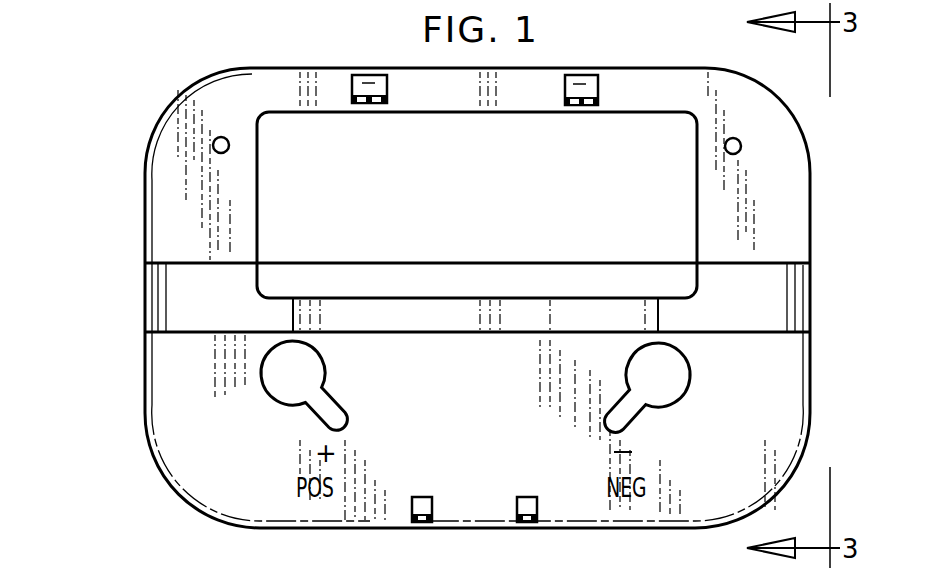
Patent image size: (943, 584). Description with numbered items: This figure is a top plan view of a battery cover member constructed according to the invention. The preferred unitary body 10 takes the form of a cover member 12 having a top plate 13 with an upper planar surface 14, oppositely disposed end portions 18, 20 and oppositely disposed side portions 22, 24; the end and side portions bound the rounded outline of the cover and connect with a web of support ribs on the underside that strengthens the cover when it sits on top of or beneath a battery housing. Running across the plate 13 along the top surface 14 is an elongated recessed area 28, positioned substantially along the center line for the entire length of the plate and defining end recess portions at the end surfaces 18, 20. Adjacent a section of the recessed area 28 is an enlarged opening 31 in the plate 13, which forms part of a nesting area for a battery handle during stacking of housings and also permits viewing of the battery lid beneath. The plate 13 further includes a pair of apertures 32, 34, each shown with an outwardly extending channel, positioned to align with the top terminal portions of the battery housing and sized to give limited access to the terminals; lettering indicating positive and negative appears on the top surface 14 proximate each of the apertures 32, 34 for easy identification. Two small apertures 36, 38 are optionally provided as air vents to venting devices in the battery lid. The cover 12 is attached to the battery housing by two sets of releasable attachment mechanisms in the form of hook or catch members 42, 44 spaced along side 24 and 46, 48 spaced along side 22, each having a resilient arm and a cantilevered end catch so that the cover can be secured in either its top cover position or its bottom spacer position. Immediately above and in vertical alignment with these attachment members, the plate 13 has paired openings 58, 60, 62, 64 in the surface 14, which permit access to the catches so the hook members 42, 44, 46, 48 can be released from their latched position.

The unitary body 10 is at (132, 473).
The cover member 12 is at (188, 357).
The top plate 13 is at (471, 408).
The upper planar surface 14 is at (160, 200).
The end portion 18 is at (145, 226).
The end portion 20 is at (803, 146).
The side portion 22 is at (417, 66).
The side portion 24 is at (313, 530).
The elongated recessed area 28 is at (747, 310).
The enlarged opening 31 is at (477, 222).
The aperture 32 is at (287, 377).
The aperture 34 is at (673, 383).
The small aperture 36 is at (217, 139).
The small aperture 38 is at (737, 138).
The hook member 42 is at (534, 497).
The hook member 44 is at (416, 497).
The attachment member 46 is at (584, 106).
The attachment member 48 is at (368, 105).
The opening 58 is at (521, 504).
The opening 60 is at (427, 504).
The opening 62 is at (577, 83).
The opening 64 is at (388, 95).